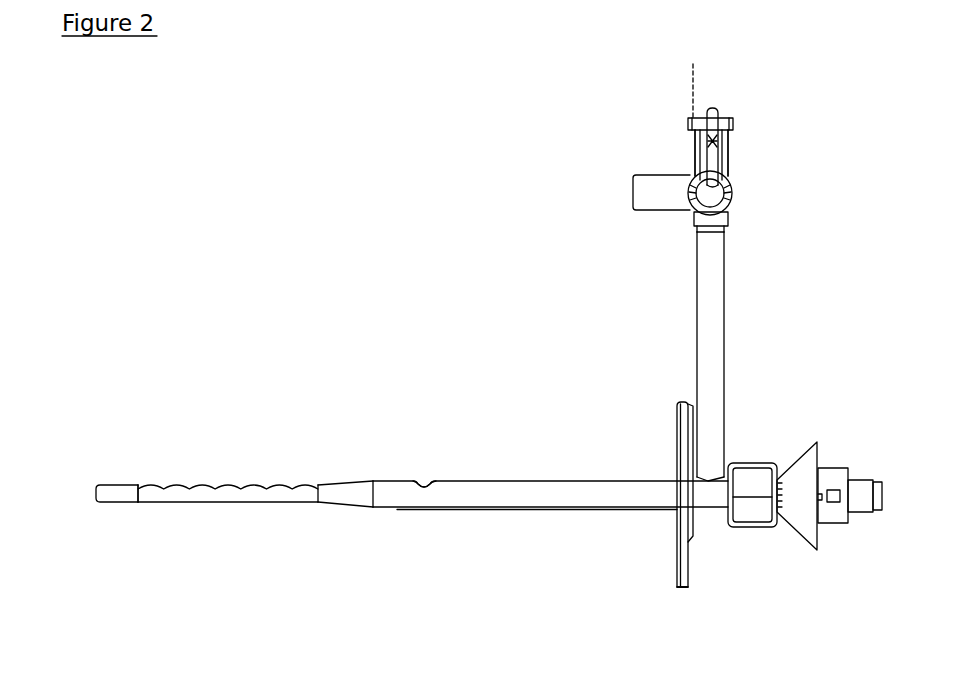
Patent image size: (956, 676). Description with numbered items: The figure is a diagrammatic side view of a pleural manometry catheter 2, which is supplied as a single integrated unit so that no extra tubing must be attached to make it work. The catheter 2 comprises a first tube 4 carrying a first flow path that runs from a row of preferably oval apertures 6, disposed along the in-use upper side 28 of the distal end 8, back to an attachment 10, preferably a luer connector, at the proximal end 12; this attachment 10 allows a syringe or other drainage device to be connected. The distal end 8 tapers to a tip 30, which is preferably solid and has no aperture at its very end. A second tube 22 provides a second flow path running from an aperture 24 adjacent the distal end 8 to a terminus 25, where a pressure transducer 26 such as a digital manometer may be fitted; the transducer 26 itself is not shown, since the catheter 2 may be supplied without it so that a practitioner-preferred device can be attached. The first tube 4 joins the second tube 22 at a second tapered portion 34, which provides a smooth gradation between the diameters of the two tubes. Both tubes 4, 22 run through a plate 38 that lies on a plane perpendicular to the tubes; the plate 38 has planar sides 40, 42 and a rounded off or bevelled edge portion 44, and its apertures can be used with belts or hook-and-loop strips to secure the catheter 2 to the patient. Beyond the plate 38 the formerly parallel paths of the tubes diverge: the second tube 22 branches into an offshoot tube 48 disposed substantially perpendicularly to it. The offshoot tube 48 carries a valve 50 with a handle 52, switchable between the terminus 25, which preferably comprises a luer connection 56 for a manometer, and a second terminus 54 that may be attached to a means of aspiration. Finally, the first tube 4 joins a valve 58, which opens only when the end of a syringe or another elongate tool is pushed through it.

The pleural manometry catheter 2 is at (360, 110).
The first tube 4 is at (217, 486).
The apertures 6 is at (176, 490).
The distal end 8 is at (128, 486).
The attachment 10 is at (871, 489).
The proximal end 12 is at (873, 505).
The second tube 22 is at (550, 452).
The aperture 24 is at (428, 487).
The terminus 25 is at (733, 120).
The pressure transducer 26 is at (706, 80).
The upper side 28 is at (310, 483).
The tip 30 is at (98, 493).
The second tapered portion 34 is at (358, 487).
The plate 38 is at (673, 496).
The planar side 40 is at (668, 550).
The planar side 42 is at (687, 553).
The bevelled edge portion 44 is at (681, 590).
The offshoot tube 48 is at (706, 296).
The valve 50 is at (729, 158).
The handle 52 is at (697, 140).
The second terminus 54 is at (642, 195).
The luer connection 56 is at (718, 108).
The valve 58 is at (779, 468).